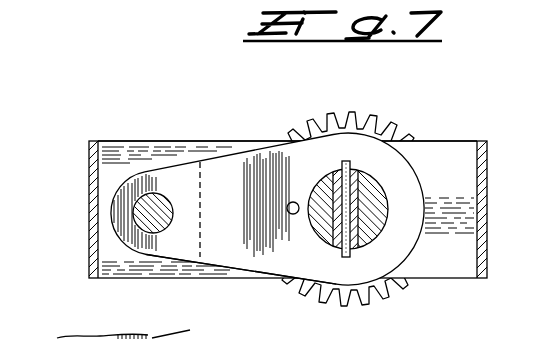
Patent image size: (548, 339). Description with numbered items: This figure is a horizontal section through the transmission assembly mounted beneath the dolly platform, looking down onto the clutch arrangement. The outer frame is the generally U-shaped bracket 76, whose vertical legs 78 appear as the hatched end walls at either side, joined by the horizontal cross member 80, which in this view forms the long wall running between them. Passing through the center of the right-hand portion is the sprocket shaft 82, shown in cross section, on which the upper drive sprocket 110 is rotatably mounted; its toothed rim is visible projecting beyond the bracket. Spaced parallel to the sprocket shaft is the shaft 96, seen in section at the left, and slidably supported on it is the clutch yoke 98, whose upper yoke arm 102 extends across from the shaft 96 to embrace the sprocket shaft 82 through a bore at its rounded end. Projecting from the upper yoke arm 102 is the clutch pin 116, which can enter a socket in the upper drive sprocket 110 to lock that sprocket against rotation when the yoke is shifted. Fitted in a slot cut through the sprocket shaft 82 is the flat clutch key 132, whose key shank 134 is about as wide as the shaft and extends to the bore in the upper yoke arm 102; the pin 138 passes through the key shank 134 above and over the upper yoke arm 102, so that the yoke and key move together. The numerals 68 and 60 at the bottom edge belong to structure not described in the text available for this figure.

The bracket 76 is at (487, 210).
The vertical legs 78 is at (90, 142).
The horizontal cross member 80 is at (159, 142).
The sprocket shaft 82 is at (378, 188).
The shaft 96 is at (141, 215).
The clutch yoke 98 is at (210, 157).
The upper yoke arm 102 is at (262, 262).
The upper drive sprocket 110 is at (387, 131).
The clutch pin 116 is at (292, 214).
The clutch key 132 is at (334, 236).
The key shank 134 is at (339, 183).
The pin 138 is at (349, 259).
The member 68 is at (79, 331).
The member 60 is at (183, 330).